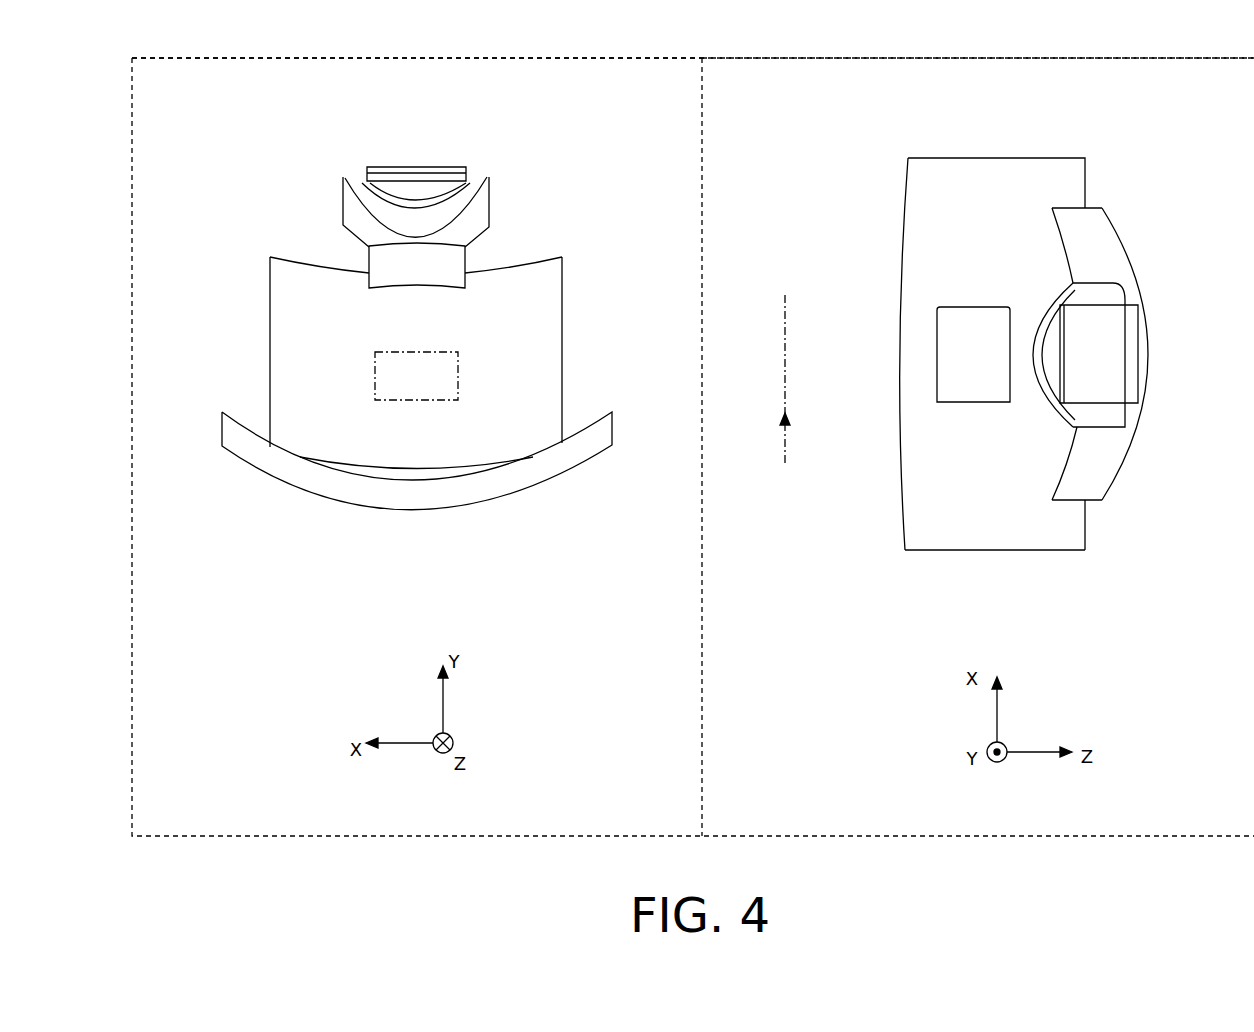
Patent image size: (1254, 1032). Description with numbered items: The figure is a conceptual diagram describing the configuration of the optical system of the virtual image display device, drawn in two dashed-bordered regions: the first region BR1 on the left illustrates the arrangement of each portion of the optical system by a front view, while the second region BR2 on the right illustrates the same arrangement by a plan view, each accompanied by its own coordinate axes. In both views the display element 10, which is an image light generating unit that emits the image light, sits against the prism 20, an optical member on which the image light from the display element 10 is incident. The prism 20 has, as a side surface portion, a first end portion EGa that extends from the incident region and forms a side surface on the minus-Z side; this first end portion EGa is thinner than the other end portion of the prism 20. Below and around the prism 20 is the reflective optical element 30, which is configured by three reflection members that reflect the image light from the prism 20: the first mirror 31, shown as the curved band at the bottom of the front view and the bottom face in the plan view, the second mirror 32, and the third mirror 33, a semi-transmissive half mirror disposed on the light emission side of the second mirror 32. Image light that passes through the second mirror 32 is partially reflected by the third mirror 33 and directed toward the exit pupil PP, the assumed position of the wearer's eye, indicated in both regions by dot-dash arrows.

The display element 10 is at (422, 183).
The prism 20 is at (480, 206).
The reflective optical element 30 is at (592, 250).
The first mirror 31 is at (413, 500).
The second mirror 32 is at (390, 272).
The third mirror 33 is at (288, 342).
The first end portion EGa is at (382, 213).
The exit pupil PP is at (478, 373).
The first region BR1 is at (630, 53).
The second region BR2 is at (760, 53).